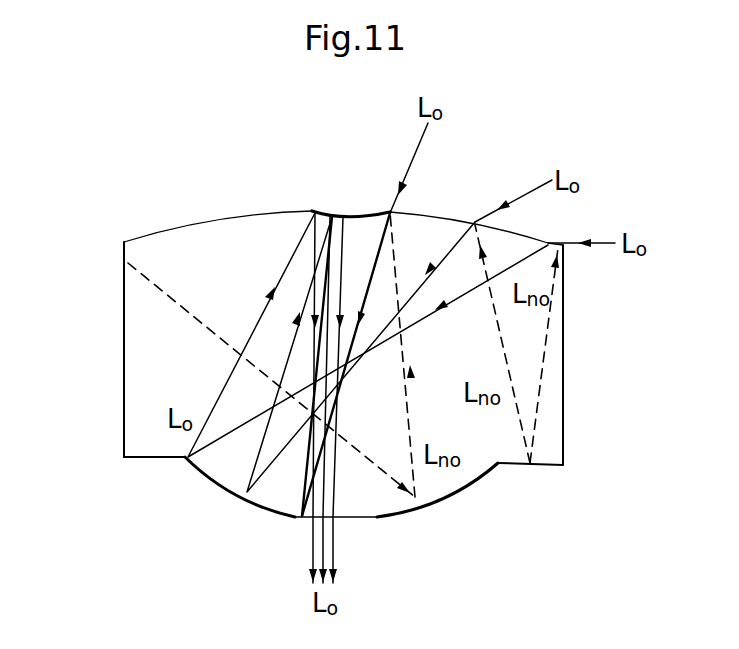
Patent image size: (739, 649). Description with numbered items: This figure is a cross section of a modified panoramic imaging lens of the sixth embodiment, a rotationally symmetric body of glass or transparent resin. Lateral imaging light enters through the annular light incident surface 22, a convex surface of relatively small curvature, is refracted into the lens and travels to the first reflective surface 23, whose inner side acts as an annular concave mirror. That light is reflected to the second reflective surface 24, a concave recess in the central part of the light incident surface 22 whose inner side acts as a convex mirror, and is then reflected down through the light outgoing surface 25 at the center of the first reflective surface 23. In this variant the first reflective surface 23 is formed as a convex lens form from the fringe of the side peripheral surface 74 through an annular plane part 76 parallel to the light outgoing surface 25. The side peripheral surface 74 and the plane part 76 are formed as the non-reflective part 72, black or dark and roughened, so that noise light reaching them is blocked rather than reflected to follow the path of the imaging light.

The light incident surface 22 is at (440, 215).
The first reflective surface 23 is at (455, 498).
The second reflective surface 24 is at (360, 212).
The light outgoing surface 25 is at (350, 519).
The non-reflective part 72 is at (565, 370).
The side peripheral surface 74 is at (128, 263).
The annular plane part 76 is at (148, 455).